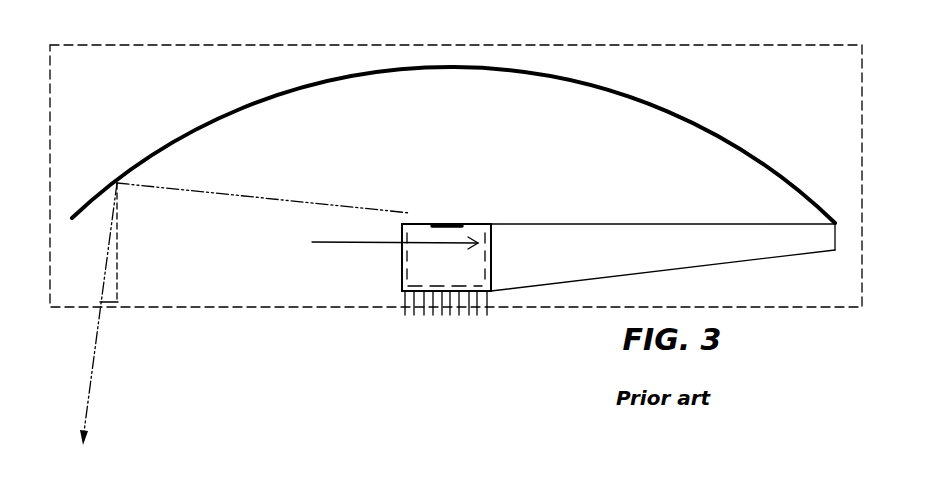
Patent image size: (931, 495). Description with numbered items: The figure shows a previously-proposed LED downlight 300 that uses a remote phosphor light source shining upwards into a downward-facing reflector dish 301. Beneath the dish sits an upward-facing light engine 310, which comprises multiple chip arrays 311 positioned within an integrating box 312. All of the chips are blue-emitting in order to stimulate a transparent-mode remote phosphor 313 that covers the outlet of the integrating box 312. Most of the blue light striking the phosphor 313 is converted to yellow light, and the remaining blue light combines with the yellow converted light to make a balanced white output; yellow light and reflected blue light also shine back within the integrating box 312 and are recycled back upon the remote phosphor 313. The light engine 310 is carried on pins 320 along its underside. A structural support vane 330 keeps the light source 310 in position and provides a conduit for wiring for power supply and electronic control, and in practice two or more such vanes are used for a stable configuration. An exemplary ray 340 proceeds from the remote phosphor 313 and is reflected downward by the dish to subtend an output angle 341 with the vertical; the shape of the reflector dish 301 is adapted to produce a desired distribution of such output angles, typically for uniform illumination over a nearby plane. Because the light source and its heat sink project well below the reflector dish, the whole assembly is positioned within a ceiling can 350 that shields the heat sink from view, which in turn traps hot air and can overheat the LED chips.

The LED downlight 300 is at (768, 113).
The downward-facing reflector dish 301 is at (163, 135).
The upward-facing light engine 310 is at (503, 192).
The chip arrays 311 is at (374, 242).
The integrating box 312 is at (402, 262).
The transparent-mode remote phosphor 313 is at (445, 222).
The package pins 320 is at (430, 317).
The structural support vane 330 is at (646, 240).
The exemplary ray 340 is at (97, 396).
The output angle 341 is at (105, 305).
The ceiling-can 350 is at (135, 48).